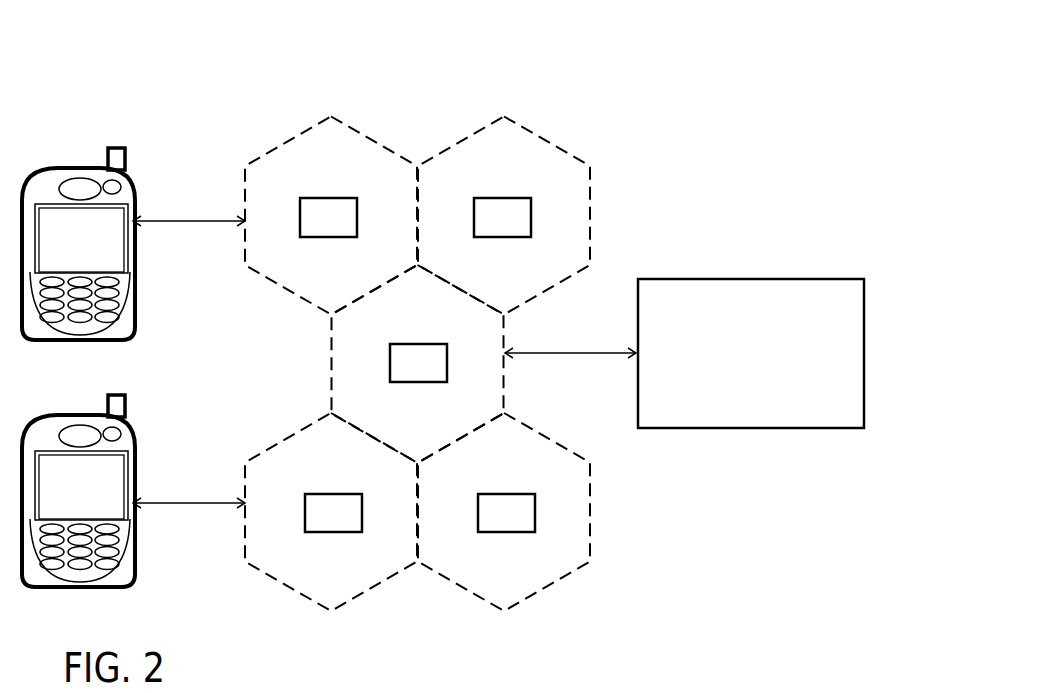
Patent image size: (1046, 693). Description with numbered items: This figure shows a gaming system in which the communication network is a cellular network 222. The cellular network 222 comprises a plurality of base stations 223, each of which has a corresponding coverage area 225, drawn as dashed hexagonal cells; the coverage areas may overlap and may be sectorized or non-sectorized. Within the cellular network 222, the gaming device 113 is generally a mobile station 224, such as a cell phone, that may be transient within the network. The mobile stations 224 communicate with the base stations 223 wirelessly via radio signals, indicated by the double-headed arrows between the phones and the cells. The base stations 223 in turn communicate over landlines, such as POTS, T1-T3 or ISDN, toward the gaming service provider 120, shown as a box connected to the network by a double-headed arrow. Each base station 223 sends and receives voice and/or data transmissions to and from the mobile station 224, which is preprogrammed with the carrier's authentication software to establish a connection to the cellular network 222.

The gaming device 113 is at (135, 350).
The mobile station 224 is at (128, 430).
The base station 223 is at (330, 197).
The coverage area 225 is at (543, 137).
The cellular network 222 is at (494, 361).
The gaming service provider 120 is at (752, 279).